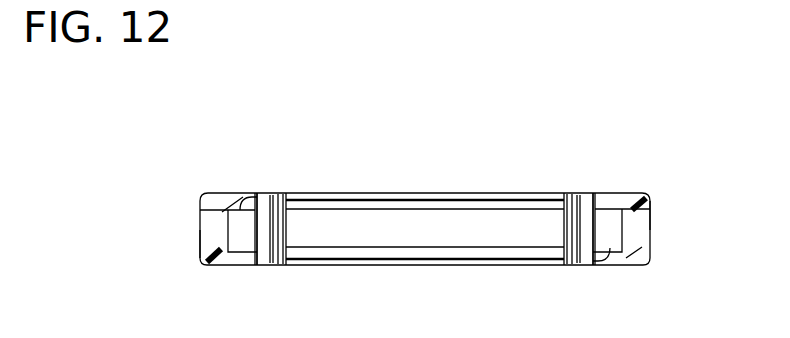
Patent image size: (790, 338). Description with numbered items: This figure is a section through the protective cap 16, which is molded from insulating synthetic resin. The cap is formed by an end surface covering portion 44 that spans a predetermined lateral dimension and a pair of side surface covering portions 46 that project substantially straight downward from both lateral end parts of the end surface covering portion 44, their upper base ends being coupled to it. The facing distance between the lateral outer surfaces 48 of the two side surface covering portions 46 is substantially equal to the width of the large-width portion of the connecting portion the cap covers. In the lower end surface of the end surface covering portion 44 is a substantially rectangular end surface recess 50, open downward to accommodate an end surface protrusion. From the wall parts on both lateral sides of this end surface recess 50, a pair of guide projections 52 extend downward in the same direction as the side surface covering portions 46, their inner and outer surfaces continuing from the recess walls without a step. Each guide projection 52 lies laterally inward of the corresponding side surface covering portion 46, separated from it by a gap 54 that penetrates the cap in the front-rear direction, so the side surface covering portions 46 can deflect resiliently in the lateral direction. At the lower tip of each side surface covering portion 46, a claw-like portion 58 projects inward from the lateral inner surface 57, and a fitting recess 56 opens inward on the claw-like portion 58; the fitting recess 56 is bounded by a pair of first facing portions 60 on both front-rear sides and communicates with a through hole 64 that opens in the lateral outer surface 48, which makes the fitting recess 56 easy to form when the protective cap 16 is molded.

The protective cap 16 is at (654, 152).
The end surface covering portion 44 is at (413, 193).
The side surface covering portion 46 is at (197, 202).
The lateral outer surface 48 is at (200, 240).
The end surface recess 50 is at (416, 258).
The guide projection 52 is at (284, 230).
The gap 54 is at (250, 251).
The fitting recess 56 is at (256, 216).
The lateral inner surface 57 is at (231, 232).
The claw-like portion 58 is at (239, 193).
The first facing portion 60 is at (247, 200).
The through hole 64 is at (210, 262).